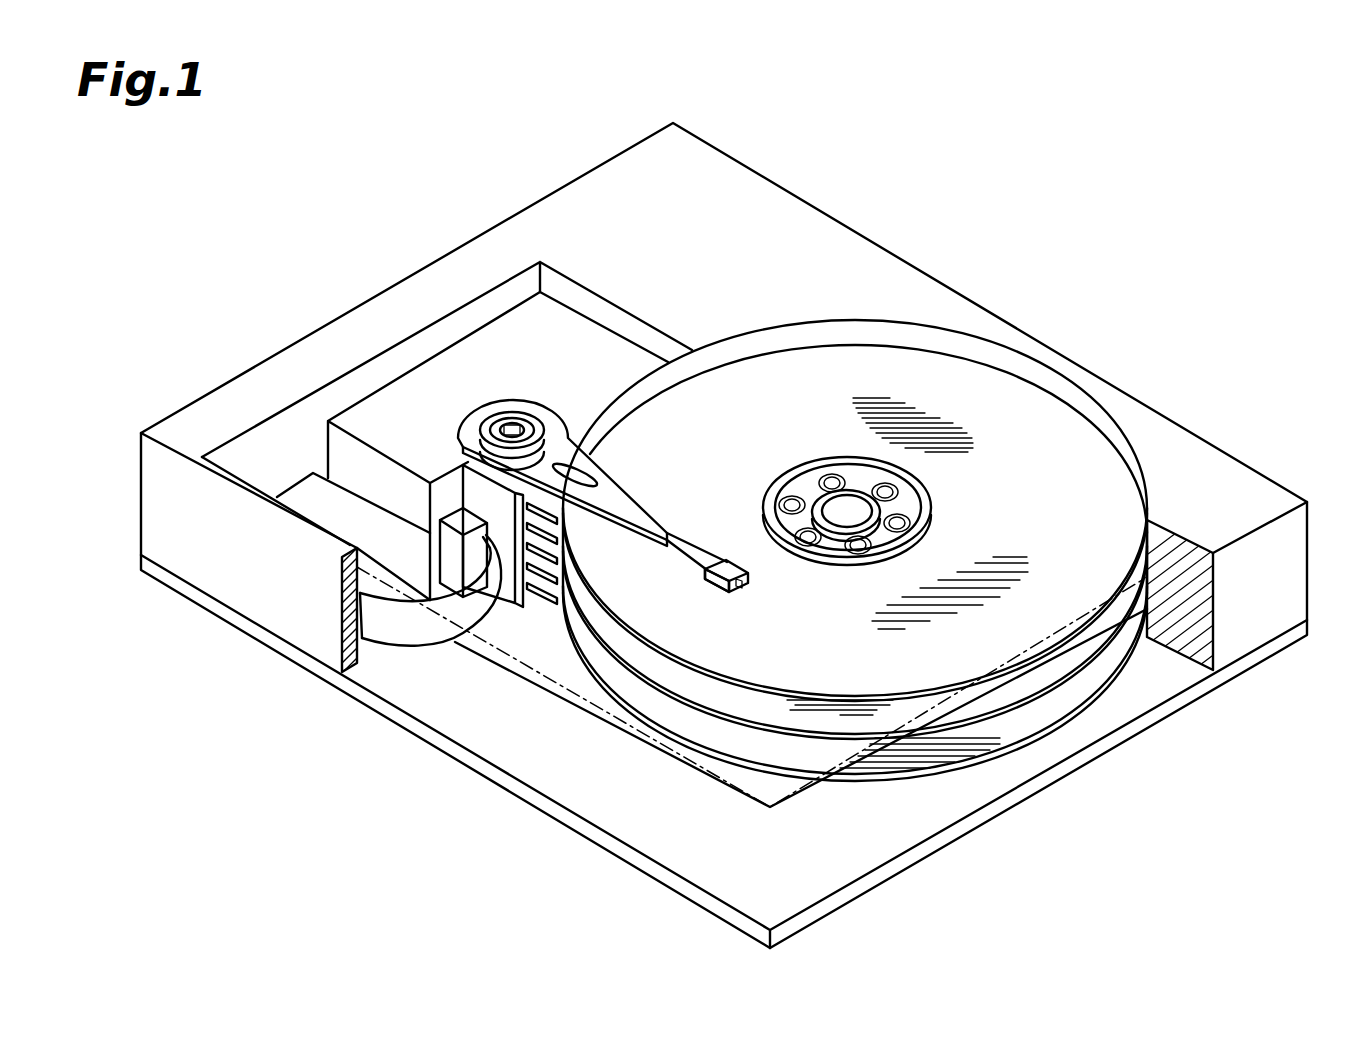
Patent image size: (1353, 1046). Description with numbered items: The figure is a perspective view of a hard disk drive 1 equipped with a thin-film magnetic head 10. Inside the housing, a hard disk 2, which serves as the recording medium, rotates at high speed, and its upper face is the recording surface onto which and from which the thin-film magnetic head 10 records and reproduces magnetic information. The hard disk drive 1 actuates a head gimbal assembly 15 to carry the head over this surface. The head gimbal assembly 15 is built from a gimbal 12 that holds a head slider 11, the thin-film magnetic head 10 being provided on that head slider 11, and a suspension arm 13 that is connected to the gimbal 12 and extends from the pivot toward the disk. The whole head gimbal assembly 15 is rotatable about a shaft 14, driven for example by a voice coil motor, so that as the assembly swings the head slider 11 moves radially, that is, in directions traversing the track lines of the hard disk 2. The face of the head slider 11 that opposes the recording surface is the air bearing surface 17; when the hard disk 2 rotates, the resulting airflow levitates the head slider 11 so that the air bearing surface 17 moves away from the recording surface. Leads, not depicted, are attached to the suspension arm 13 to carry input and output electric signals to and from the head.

The hard disk drive 1 is at (988, 236).
The hard disk 2 is at (993, 413).
The thin-film magnetic head 10 is at (730, 568).
The head slider 11 is at (715, 582).
The gimbal 12 is at (682, 553).
The suspension arm 13 is at (615, 508).
The shaft 14 is at (514, 420).
The head gimbal assembly 15 is at (666, 490).
The air bearing surface 17 is at (742, 590).